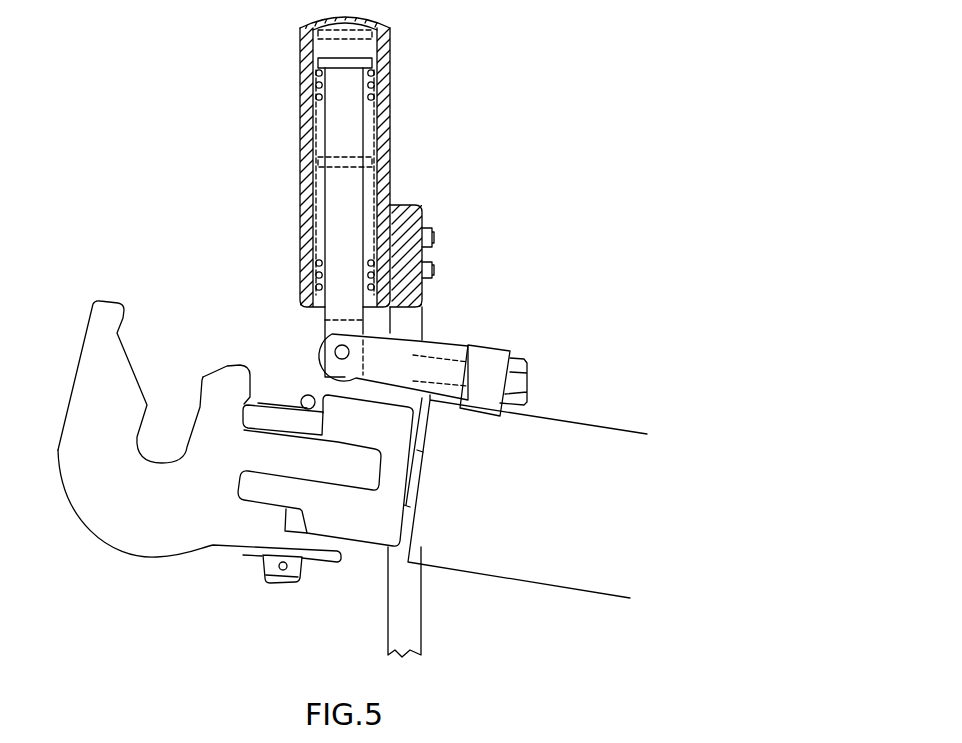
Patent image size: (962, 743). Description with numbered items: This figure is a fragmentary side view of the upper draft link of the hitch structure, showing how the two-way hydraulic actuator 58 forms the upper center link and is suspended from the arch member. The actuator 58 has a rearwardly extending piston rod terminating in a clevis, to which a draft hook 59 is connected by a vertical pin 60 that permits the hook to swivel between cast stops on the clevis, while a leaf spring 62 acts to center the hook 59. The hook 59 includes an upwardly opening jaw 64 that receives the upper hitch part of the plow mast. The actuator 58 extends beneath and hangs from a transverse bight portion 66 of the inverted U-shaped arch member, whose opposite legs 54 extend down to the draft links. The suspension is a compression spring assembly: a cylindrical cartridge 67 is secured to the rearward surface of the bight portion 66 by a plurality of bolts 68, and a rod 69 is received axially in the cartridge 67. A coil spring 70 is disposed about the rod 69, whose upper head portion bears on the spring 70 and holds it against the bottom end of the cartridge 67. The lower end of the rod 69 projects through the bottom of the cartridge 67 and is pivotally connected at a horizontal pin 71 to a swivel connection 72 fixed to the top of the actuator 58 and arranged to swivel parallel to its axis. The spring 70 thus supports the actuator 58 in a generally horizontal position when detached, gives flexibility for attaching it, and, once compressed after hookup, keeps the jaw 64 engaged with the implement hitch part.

The legs 54 is at (420, 613).
The two-way hydraulic actuator 58 is at (583, 421).
The draft hook 59 is at (217, 350).
The vertical pin 60 is at (303, 396).
The leaf spring 62 is at (322, 423).
The upwardly opening jaw 64 is at (70, 396).
The transverse bight portion 66 is at (412, 207).
The cylindrical cartridge 67 is at (300, 126).
The bolts 68 is at (427, 240).
The rod 69 is at (327, 312).
The coil spring 70 is at (382, 79).
The horizontal pin 71 is at (331, 354).
The swivel connection 72 is at (447, 345).